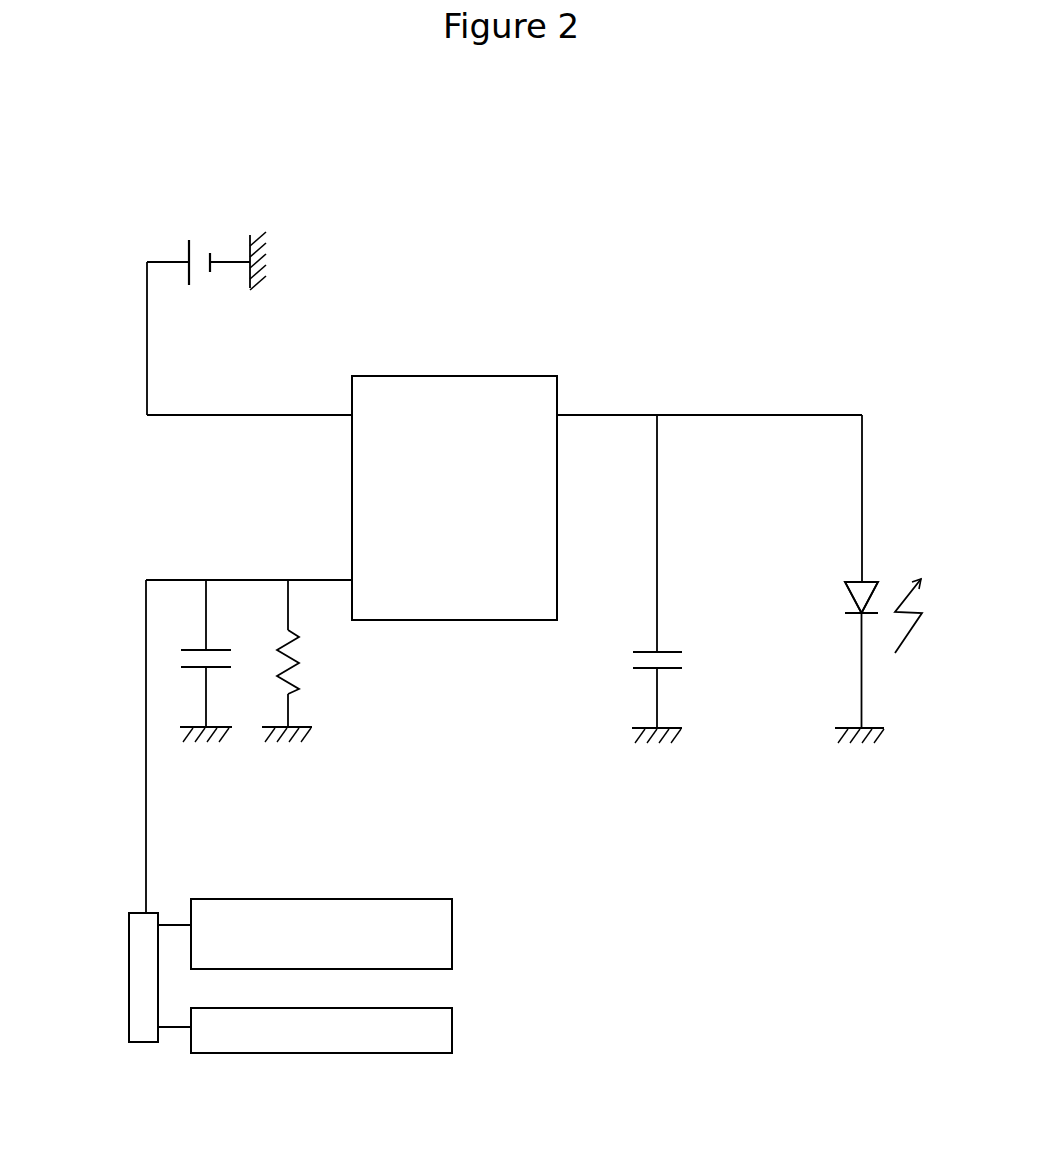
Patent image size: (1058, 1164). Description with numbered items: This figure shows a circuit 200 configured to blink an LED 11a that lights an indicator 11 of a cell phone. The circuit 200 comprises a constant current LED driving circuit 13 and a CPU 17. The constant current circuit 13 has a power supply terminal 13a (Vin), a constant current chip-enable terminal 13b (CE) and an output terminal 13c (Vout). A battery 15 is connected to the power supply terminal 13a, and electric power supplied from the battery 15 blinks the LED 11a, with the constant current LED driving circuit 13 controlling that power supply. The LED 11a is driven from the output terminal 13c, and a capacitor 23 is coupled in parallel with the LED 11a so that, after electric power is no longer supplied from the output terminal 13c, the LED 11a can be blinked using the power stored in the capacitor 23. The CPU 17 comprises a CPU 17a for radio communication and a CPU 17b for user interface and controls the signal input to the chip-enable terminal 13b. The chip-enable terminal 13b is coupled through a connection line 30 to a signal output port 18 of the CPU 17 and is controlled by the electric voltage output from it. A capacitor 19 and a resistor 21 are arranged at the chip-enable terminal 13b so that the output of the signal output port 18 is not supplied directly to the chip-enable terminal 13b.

The circuit 200 is at (767, 162).
The battery 15 is at (197, 253).
The constant current LED driving circuit 13 is at (447, 376).
The power supply terminal 13a is at (352, 415).
The constant current chip-enable terminal 13b is at (350, 578).
The output terminal 13c is at (557, 415).
The capacitor 23 is at (673, 648).
The LED 11a is at (867, 582).
The indicator 11 is at (876, 582).
The connection line 30 is at (146, 748).
The capacitor 19 is at (227, 668).
The resistor 21 is at (290, 682).
The signal output port 18 is at (130, 1040).
The CPU 17 is at (375, 976).
The CPU for radio communication 17a is at (453, 925).
The CPU for user interface 17b is at (344, 1030).